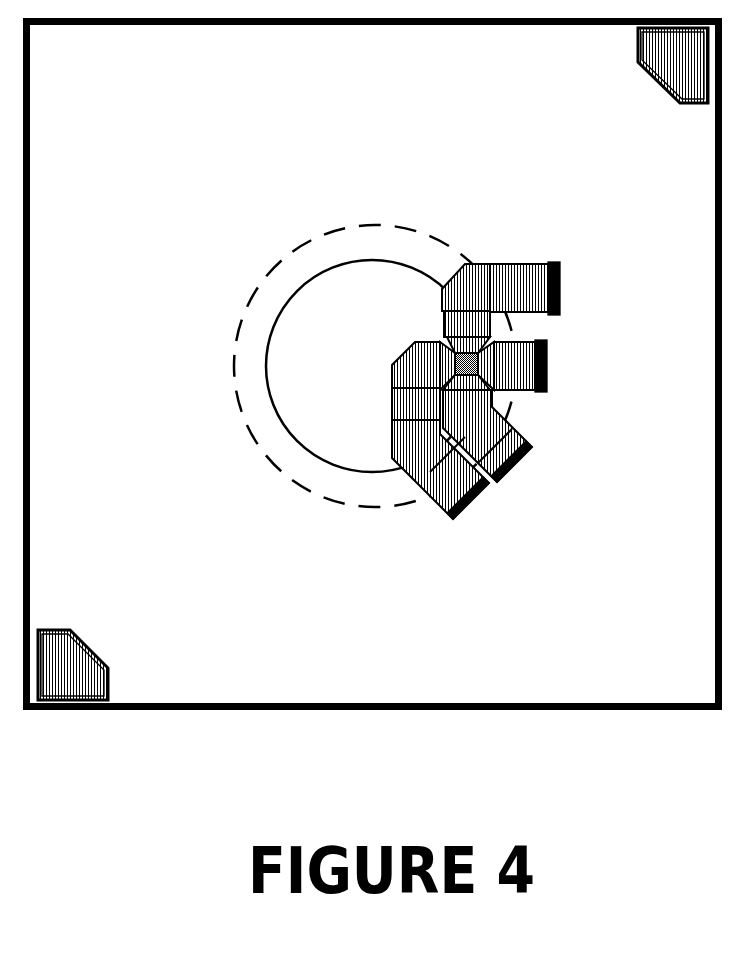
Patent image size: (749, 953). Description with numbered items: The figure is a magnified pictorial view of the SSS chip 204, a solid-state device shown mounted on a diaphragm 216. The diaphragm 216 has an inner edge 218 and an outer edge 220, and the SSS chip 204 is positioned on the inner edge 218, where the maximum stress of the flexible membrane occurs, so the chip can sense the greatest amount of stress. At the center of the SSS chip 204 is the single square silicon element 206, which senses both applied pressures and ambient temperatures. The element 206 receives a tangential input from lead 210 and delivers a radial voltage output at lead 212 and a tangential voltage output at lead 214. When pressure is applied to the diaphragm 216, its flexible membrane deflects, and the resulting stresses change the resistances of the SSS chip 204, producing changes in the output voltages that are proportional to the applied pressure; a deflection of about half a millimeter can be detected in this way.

The SSS chip 204 is at (192, 222).
The single square silicon element 206 is at (503, 400).
The lead 210 is at (566, 371).
The lead 212 is at (541, 465).
The lead 214 is at (473, 532).
The diaphragm 216 is at (357, 371).
The inner edge 218 is at (526, 255).
The outer edge 220 is at (277, 484).